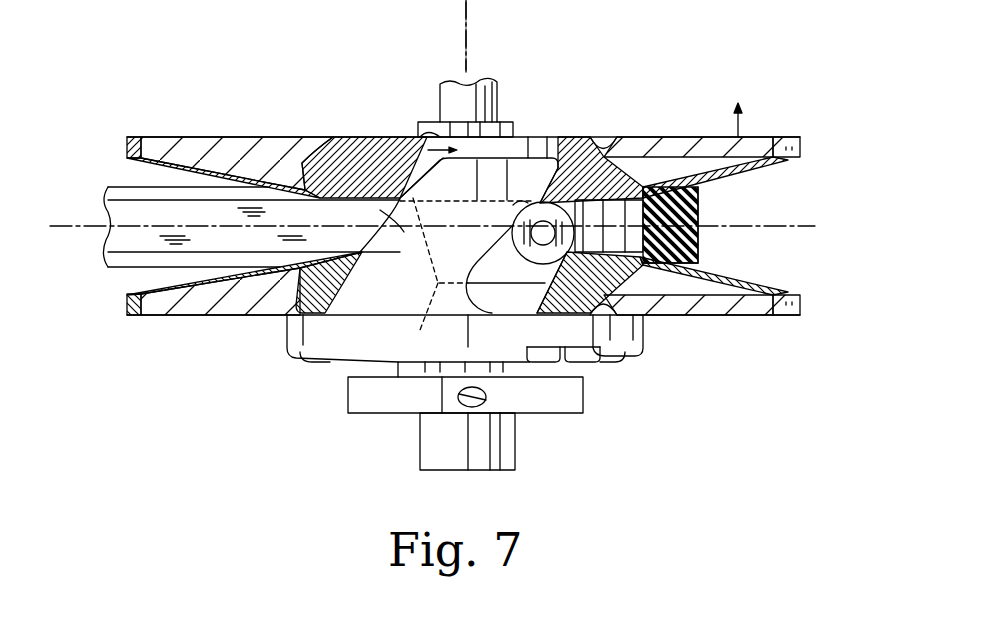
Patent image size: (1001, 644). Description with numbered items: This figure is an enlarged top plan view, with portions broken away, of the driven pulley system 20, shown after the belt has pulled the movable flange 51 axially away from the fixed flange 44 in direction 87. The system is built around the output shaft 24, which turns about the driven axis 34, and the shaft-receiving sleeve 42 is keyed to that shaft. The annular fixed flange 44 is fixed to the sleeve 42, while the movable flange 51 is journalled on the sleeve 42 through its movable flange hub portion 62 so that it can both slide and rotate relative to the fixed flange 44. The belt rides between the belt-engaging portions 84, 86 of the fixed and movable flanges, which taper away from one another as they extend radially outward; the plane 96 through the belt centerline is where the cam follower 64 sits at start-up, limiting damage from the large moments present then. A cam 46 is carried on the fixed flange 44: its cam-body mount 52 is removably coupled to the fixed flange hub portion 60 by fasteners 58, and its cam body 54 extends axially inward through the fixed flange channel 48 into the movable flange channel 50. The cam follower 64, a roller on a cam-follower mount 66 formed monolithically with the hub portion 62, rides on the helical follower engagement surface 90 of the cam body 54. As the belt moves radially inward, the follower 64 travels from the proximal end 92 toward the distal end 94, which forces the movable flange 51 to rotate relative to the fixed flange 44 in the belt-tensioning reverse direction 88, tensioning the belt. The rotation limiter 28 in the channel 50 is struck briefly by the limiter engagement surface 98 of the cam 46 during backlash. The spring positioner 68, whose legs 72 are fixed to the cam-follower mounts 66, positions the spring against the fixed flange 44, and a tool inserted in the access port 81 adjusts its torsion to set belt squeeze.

The driven pulley system 20 is at (233, 80).
The driven axis 34 is at (453, 40).
The output shaft 24 is at (440, 106).
The belt-tensioning reverse direction 88 is at (418, 135).
The shaft-receiving sleeve 42 is at (503, 122).
The distal end 94 is at (515, 153).
The movable flange channel 50 is at (570, 152).
The movable flange hub portion 62 is at (613, 138).
The movable flange 51 is at (690, 131).
The axial inward direction 87 is at (740, 135).
The plane 96 is at (68, 206).
The rotation limiter 28 is at (427, 172).
The cam follower 64 is at (545, 206).
The cam body 54 is at (375, 237).
The limiter engagement surface 98 is at (376, 237).
The follower engagement surface 90 is at (490, 243).
The cam-follower mount 66 is at (523, 270).
The proximal end 92 is at (388, 306).
The fixed flange channel 48 is at (374, 268).
The cam-body mount 52 is at (313, 336).
The leg 72 is at (428, 362).
The fixed flange hub portion 60 is at (562, 340).
The fastener 58 is at (306, 362).
The cam 46 is at (332, 363).
The access port 81 is at (488, 397).
The spring positioner 68 is at (381, 415).
The belt-engaging portion of movable flange 86 is at (723, 187).
The belt-engaging portion of fixed flange 84 is at (723, 263).
The fixed flange 44 is at (720, 322).